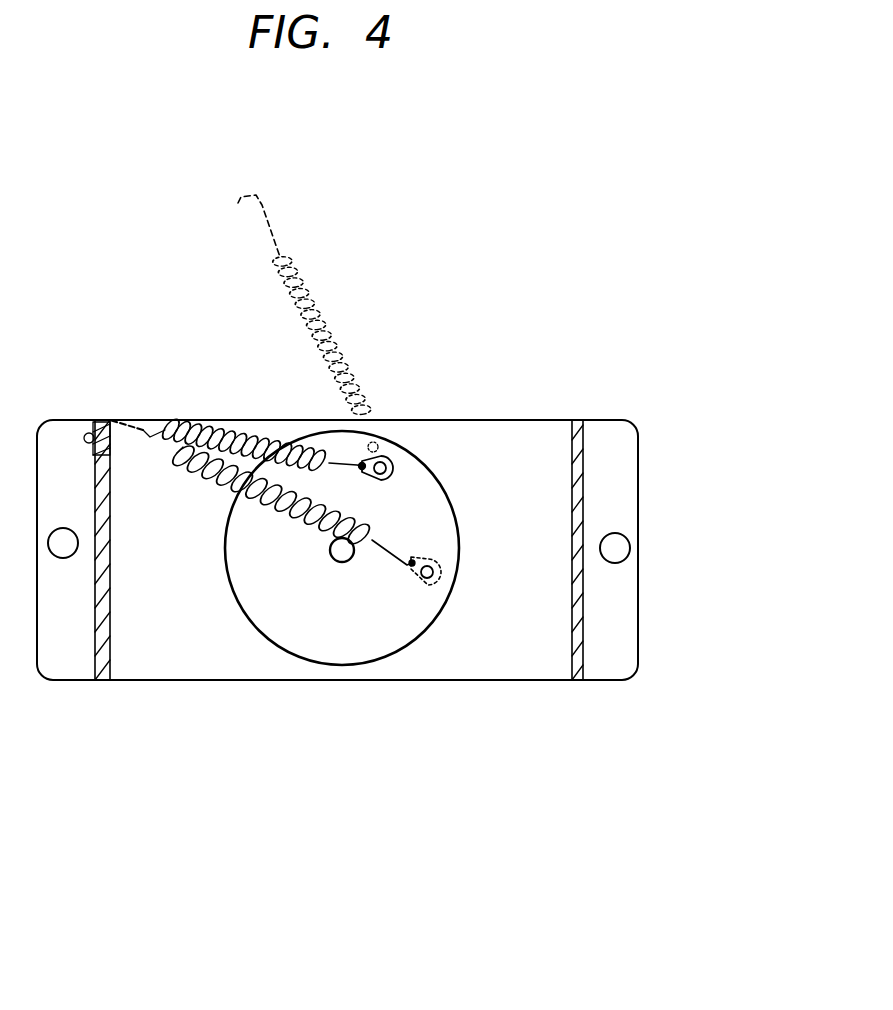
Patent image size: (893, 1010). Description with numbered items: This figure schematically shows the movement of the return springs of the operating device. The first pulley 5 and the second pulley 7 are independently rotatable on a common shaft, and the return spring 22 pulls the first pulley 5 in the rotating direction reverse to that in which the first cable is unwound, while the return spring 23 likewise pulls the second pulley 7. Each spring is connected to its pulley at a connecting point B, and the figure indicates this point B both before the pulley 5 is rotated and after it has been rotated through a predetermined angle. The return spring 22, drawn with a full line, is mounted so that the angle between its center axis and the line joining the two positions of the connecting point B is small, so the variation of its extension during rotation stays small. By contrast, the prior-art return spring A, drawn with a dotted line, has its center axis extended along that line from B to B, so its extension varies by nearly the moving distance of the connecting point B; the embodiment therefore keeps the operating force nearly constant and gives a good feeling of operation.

The first pulley 5 is at (356, 646).
The second pulley 7 is at (337, 638).
The return spring 22 is at (227, 432).
The return spring 23 is at (290, 502).
The return spring of the prior art A is at (322, 296).
The connecting point B is at (437, 562).